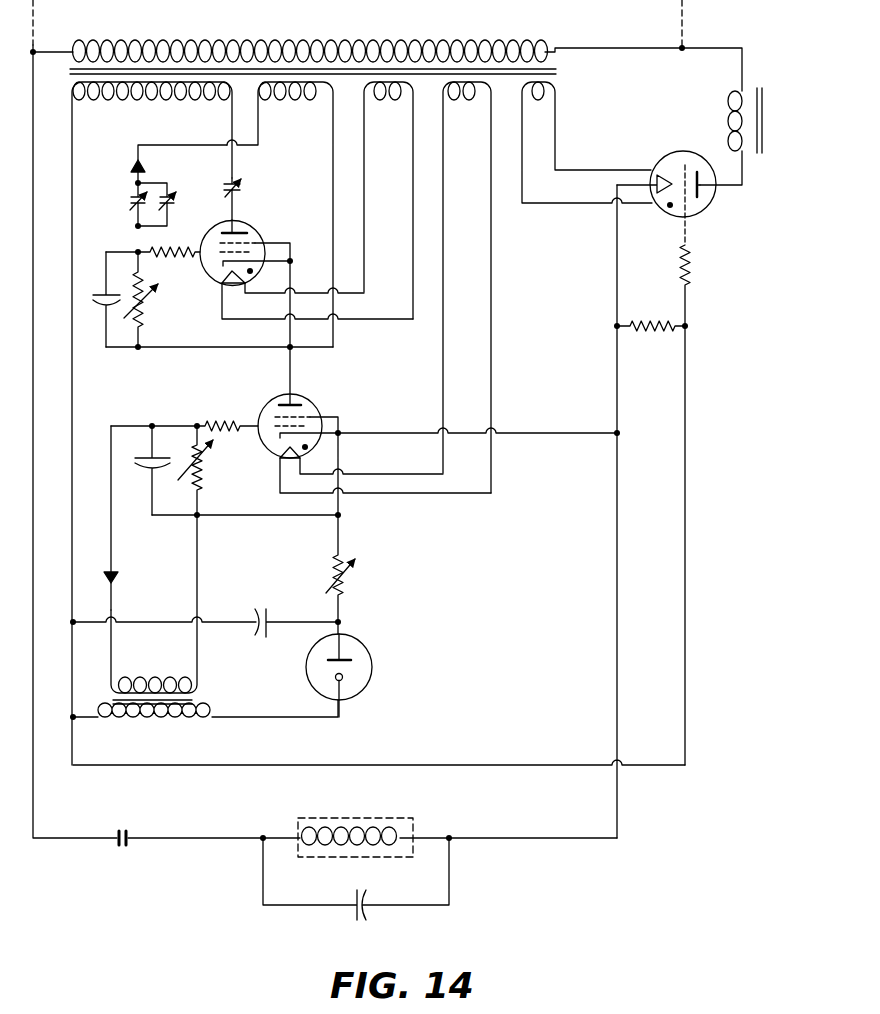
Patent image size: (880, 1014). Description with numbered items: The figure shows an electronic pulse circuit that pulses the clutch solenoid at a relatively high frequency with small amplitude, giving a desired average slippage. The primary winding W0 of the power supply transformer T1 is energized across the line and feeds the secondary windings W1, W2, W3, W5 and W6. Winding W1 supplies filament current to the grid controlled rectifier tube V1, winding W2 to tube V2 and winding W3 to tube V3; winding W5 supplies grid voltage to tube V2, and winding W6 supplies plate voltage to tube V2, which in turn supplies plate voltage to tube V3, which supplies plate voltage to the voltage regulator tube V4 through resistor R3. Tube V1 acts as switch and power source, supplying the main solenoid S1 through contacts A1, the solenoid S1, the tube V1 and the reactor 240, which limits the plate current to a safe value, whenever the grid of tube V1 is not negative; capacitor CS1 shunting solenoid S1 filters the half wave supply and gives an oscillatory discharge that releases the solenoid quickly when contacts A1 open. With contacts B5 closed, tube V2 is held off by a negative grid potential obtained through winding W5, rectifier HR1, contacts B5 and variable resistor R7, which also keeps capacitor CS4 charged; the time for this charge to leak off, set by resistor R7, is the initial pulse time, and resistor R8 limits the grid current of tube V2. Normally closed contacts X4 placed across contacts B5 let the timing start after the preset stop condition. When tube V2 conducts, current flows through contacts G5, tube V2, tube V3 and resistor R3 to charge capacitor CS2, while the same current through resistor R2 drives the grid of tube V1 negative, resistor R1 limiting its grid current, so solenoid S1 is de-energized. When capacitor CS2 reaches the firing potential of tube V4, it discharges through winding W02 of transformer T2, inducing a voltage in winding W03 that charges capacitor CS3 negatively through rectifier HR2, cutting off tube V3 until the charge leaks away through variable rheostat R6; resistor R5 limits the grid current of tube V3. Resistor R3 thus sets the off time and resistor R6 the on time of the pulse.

The primary winding W0 is at (357, 36).
The power supply transformer T1 is at (328, 64).
The reactor 240 is at (757, 87).
The secondary winding W6 is at (152, 423).
The secondary winding W5 is at (280, 214).
The secondary winding W2 is at (388, 200).
The secondary winding W3 is at (467, 287).
The secondary winding W1 is at (587, 142).
The grid controlled rectifier tube V1 is at (666, 185).
The resistor R1 is at (699, 505).
The resistor R2 is at (651, 339).
The rectifier HR1 is at (179, 165).
The contacts B5 is at (124, 204).
The normally closed contacts X4 is at (169, 204).
The contacts G5 is at (246, 199).
The grid controlled rectifier tube V2 is at (306, 267).
The resistor R8 is at (153, 243).
The capacitor CS4 is at (96, 299).
The variable resistor R7 is at (148, 299).
The grid controlled rectifier tube V3 is at (437, 447).
The resistor R5 is at (184, 416).
The capacitor CS3 is at (140, 470).
The variable rheostat R6 is at (203, 470).
The rectifier HR2 is at (130, 518).
The capacitor CS2 is at (205, 612).
The variable rheostat R3 is at (349, 574).
The voltage regulator tube V4 is at (343, 671).
The winding W03 is at (154, 604).
The transformer T2 is at (169, 699).
The winding W02 is at (205, 728).
The contacts A1 is at (117, 856).
The main solenoid S1 is at (356, 827).
The capacitor CS1 is at (356, 892).